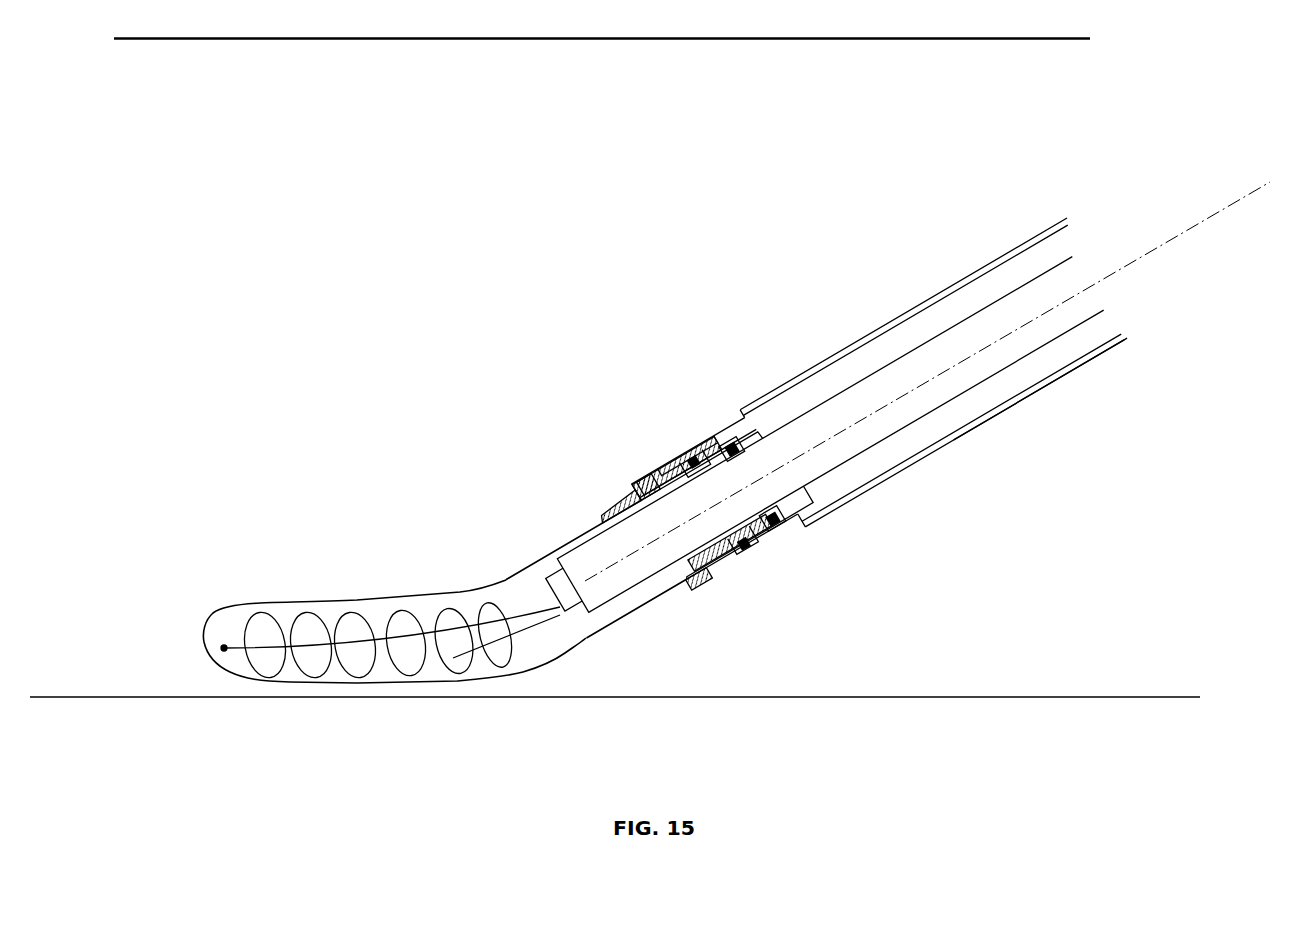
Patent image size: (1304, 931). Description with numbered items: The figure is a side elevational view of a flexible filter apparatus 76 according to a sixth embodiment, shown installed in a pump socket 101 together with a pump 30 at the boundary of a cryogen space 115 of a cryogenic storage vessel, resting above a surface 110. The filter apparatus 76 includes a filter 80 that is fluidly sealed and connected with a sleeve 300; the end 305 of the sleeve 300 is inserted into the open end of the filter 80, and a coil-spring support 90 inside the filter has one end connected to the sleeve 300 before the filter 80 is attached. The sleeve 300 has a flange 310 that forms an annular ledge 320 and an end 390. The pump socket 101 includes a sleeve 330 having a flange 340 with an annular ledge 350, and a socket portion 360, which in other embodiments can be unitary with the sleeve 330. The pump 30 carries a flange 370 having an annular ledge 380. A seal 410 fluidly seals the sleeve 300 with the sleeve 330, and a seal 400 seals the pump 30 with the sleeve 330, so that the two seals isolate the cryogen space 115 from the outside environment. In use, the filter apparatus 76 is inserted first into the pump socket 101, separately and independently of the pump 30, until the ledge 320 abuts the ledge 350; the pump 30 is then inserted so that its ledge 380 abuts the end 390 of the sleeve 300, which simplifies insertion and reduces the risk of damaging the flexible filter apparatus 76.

The pump 30 is at (1047, 272).
The filter apparatus 76 is at (209, 611).
The filter 80 is at (308, 610).
The coil-spring support 90 is at (351, 610).
The pump socket 101 is at (889, 321).
The support surface 110 is at (1001, 694).
The cryogen space 115 is at (273, 447).
The sleeve 300 is at (672, 568).
The end of sleeve 305 is at (594, 528).
The flange 310 is at (683, 465).
The annular ledge 320 is at (640, 482).
The sleeve 330 is at (770, 525).
The flange 340 is at (622, 497).
The annular ledge 350 is at (700, 575).
The socket portion 360 is at (1003, 413).
The flange 370 is at (776, 545).
The annular ledge 380 is at (745, 548).
The end 390 is at (712, 447).
The seal 400 is at (728, 448).
The seal 410 is at (689, 455).